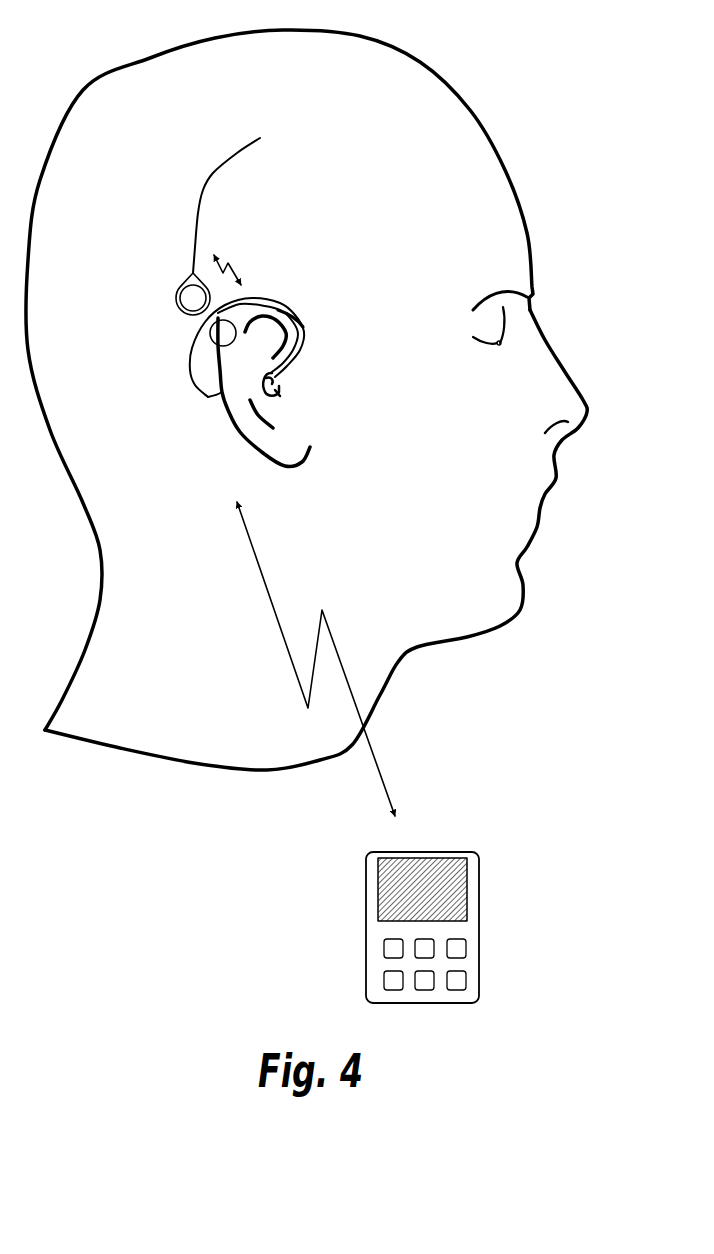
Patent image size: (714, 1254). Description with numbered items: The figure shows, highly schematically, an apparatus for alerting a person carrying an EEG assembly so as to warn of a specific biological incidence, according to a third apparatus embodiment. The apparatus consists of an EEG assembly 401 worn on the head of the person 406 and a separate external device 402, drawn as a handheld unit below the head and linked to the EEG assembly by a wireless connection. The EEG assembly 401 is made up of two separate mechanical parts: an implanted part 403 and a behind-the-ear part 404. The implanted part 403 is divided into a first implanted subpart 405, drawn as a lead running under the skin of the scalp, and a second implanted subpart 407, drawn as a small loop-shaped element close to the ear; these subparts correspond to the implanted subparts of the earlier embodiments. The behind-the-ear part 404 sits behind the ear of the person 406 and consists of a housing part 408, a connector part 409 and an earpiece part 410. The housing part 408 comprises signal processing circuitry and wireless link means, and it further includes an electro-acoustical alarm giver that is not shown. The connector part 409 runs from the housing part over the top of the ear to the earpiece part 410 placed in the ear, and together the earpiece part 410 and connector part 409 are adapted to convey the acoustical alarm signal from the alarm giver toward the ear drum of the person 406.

The EEG assembly 401 is at (334, 227).
The external device 402 is at (480, 907).
The implanted part 403 is at (153, 227).
The behind-the-ear part 404 is at (158, 369).
The first implanted subpart 405 is at (202, 190).
The person 406 is at (521, 114).
The second implanted subpart 407 is at (173, 307).
The housing part 408 is at (283, 302).
The connector part 409 is at (306, 340).
The earpiece part 410 is at (279, 398).